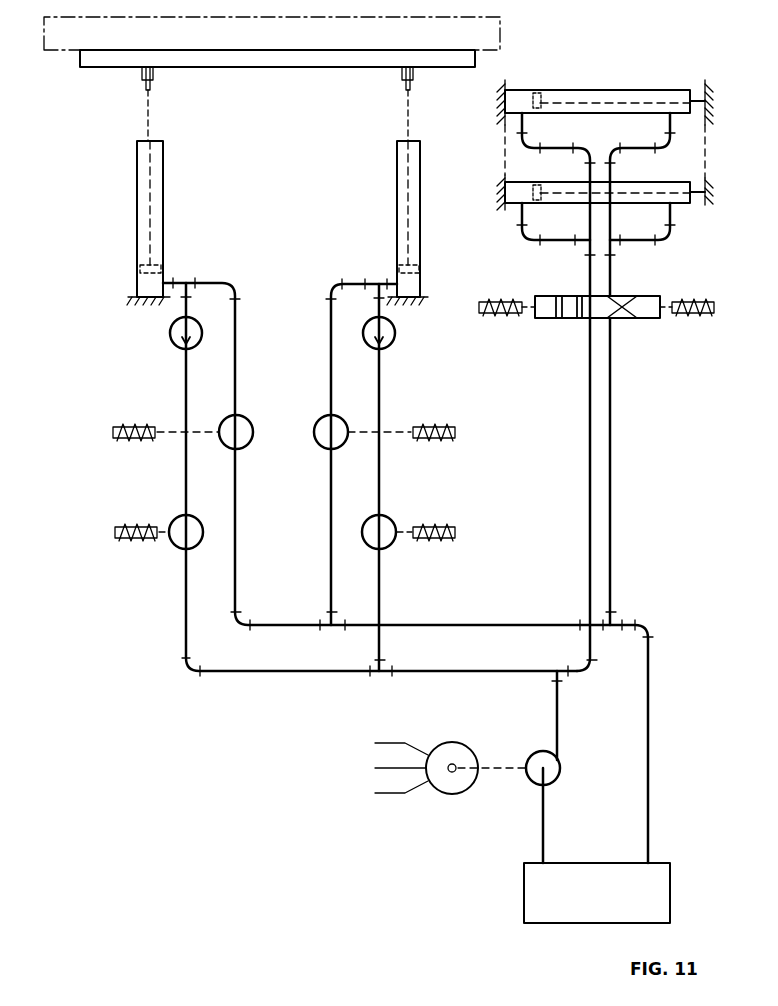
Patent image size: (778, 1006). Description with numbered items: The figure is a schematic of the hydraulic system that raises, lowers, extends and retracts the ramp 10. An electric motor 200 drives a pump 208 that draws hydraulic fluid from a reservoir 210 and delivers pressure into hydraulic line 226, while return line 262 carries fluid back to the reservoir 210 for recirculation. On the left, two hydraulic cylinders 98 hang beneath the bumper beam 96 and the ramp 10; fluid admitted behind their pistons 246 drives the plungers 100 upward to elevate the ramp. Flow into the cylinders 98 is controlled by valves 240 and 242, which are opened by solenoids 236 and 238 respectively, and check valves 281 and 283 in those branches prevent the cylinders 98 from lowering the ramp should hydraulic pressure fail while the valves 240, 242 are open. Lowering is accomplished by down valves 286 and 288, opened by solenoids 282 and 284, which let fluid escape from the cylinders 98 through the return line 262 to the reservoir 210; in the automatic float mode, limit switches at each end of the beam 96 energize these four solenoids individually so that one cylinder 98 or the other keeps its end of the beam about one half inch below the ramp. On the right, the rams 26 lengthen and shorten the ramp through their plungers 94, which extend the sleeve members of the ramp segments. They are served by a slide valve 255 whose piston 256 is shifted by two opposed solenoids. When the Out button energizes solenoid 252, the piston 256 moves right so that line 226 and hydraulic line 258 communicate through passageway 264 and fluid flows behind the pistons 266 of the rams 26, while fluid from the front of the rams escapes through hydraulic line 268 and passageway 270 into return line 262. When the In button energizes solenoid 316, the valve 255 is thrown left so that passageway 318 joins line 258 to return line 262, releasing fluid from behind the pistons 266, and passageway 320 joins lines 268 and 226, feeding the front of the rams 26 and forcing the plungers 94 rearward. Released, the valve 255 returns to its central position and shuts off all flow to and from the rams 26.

The ramp 10 is at (315, 39).
The bumper beam 96 is at (289, 67).
The plunger 100 is at (150, 116).
The hydraulic cylinder 98 is at (163, 188).
The piston 246 is at (139, 268).
The check valve 281 is at (170, 333).
The check valve 283 is at (395, 333).
The solenoid 282 is at (143, 425).
The solenoid 284 is at (428, 425).
The valve 286 is at (241, 418).
The valve 288 is at (323, 418).
The solenoid 236 is at (145, 525).
The solenoid 238 is at (430, 526).
The valve 240 is at (195, 521).
The valve 242 is at (371, 521).
The ram 26 is at (630, 90).
The piston 266 is at (540, 93).
The plunger 94 is at (700, 98).
The hydraulic line 258 is at (590, 255).
The hydraulic line 268 is at (610, 255).
The slide valve 255 is at (588, 311).
The passageway 264 is at (556, 296).
The passageway 270 is at (578, 296).
The piston 256 is at (588, 310).
The passageway 318 is at (621, 298).
The passageway 320 is at (620, 313).
The solenoid 252 is at (500, 318).
The solenoid 316 is at (680, 300).
The hydraulic line 226 is at (590, 480).
The return line 262 is at (610, 438).
The electric motor 200 is at (463, 752).
The pump 208 is at (562, 772).
The reservoir 210 is at (613, 862).